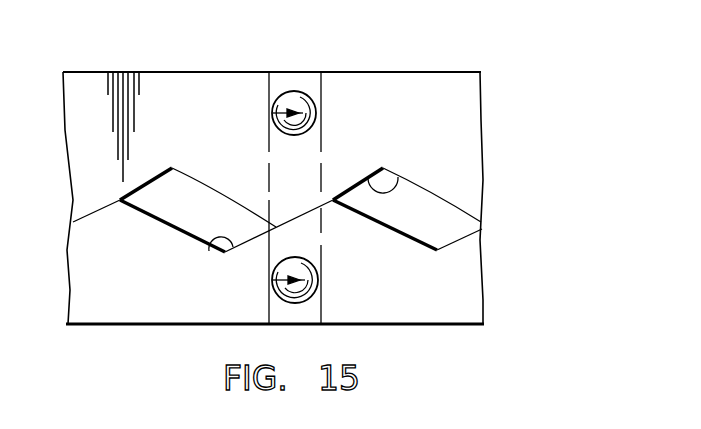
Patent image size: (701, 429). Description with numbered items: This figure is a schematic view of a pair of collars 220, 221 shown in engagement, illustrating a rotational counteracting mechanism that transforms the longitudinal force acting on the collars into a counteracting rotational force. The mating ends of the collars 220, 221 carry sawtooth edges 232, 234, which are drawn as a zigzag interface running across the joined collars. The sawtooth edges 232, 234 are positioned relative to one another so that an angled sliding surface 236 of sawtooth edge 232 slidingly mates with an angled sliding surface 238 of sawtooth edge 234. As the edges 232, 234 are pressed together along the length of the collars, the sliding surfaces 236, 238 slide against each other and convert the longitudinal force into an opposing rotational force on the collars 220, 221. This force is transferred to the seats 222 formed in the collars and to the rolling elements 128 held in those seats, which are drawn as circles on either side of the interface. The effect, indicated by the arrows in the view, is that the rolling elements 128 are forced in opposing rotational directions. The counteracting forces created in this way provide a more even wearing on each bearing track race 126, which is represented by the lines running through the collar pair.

The bearing track race 126 is at (321, 78).
The rolling elements 128 is at (284, 104).
The collar 220 is at (453, 284).
The collar 221 is at (460, 117).
The seats 222 is at (318, 105).
The sawtooth edge 232 is at (418, 227).
The sawtooth edge 234 is at (185, 192).
The angled sliding surface 236 is at (209, 251).
The angled sliding surface 238 is at (398, 177).